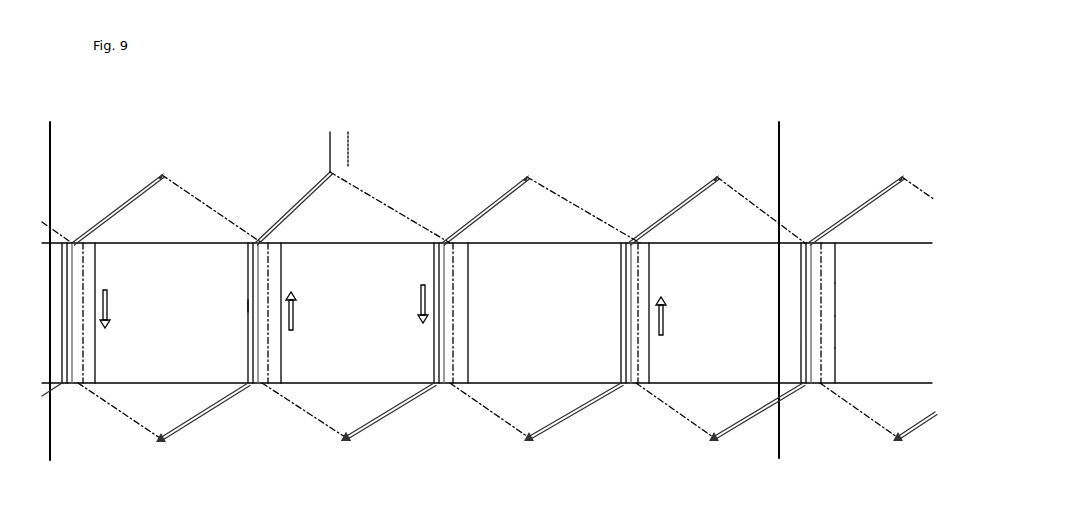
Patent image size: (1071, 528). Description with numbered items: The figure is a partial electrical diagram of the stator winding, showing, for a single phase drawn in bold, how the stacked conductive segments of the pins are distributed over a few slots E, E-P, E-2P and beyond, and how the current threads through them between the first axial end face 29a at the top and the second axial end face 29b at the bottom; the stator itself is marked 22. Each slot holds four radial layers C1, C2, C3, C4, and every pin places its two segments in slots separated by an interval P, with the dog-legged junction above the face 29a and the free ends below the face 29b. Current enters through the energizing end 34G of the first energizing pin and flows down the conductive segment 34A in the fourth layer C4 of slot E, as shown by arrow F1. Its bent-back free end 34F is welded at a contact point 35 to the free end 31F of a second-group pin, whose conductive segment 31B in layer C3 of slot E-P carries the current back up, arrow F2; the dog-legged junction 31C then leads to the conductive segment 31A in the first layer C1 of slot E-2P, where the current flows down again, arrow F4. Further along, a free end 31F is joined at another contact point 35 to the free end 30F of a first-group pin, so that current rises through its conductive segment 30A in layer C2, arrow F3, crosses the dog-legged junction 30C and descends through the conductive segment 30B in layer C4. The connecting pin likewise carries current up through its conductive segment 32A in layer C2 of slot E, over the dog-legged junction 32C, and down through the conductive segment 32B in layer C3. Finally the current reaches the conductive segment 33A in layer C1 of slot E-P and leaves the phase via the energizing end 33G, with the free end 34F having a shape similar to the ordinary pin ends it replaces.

The stator core / coil slot 22 is at (108, 338).
The first axial end face 29a is at (884, 240).
The second axial end face 29b is at (873, 386).
The conductive segment 30A is at (622, 294).
The conductive segment 30B is at (827, 314).
The dog-legged junction 30C is at (587, 208).
The free end 30F is at (658, 402).
The conductive segment 31A is at (62, 312).
The conductive segment 31B is at (268, 364).
The dog-legged junction 31C is at (178, 190).
The free end 31F is at (308, 408).
The conductive segment 32A is at (262, 274).
The conductive segment 32B is at (453, 369).
The dog-legged junction 32C is at (362, 188).
The conductive segment 33A is at (247, 282).
The energizing end 33G is at (330, 143).
The conductive segment 34A is at (460, 336).
The free end 34F is at (422, 400).
The energizing end 34G is at (348, 145).
The contact point 35 is at (344, 441).
The first layer C1 is at (804, 360).
The second layer C2 is at (812, 337).
The third layer C3 is at (823, 303).
The fourth layer C4 is at (829, 278).
The slot E is at (470, 284).
The slot E-P is at (247, 305).
The slot E-2P is at (95, 283).
The arrow F1 is at (413, 304).
The arrow F2 is at (299, 311).
The arrow F3 is at (669, 316).
The arrow F4 is at (114, 309).